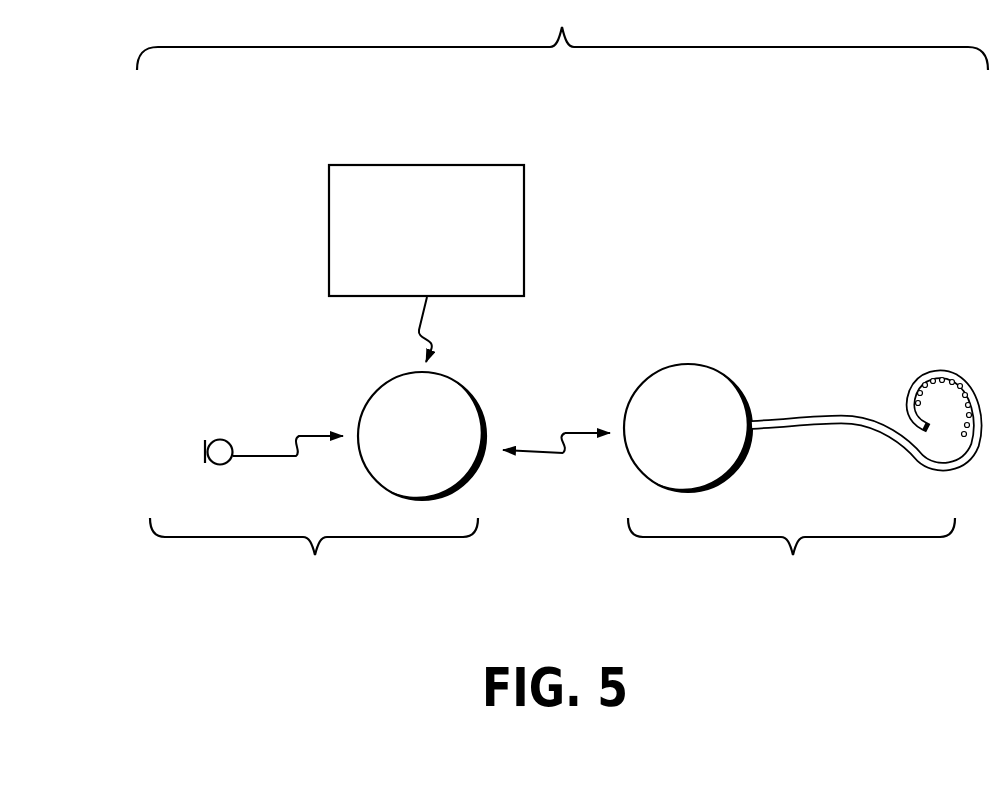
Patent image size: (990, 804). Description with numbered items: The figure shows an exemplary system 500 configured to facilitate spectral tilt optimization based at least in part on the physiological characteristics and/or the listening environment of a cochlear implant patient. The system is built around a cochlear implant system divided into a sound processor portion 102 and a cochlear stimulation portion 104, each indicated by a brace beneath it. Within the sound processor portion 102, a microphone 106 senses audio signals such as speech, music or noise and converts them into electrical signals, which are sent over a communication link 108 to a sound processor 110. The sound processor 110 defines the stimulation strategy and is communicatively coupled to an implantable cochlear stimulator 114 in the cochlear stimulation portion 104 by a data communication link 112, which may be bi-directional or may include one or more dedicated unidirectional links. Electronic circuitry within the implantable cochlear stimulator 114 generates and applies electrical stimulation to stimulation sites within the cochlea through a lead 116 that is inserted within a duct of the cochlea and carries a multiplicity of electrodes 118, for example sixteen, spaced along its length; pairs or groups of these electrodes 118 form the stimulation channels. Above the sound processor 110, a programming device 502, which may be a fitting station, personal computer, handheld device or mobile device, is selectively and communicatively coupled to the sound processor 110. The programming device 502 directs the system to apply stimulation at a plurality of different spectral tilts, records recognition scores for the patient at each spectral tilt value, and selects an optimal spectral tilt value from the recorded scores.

The system 500 is at (562, 36).
The programming device 502 is at (410, 268).
The sound processor portion 102 is at (314, 550).
The cochlear stimulation portion 104 is at (791, 550).
The microphone 106 is at (206, 442).
The communication link 108 is at (296, 436).
The sound processor 110 is at (362, 410).
The data communication link 112 is at (565, 432).
The implantable cochlear stimulator 114 is at (676, 388).
The lead 116 is at (923, 350).
The electrodes 118 is at (950, 383).